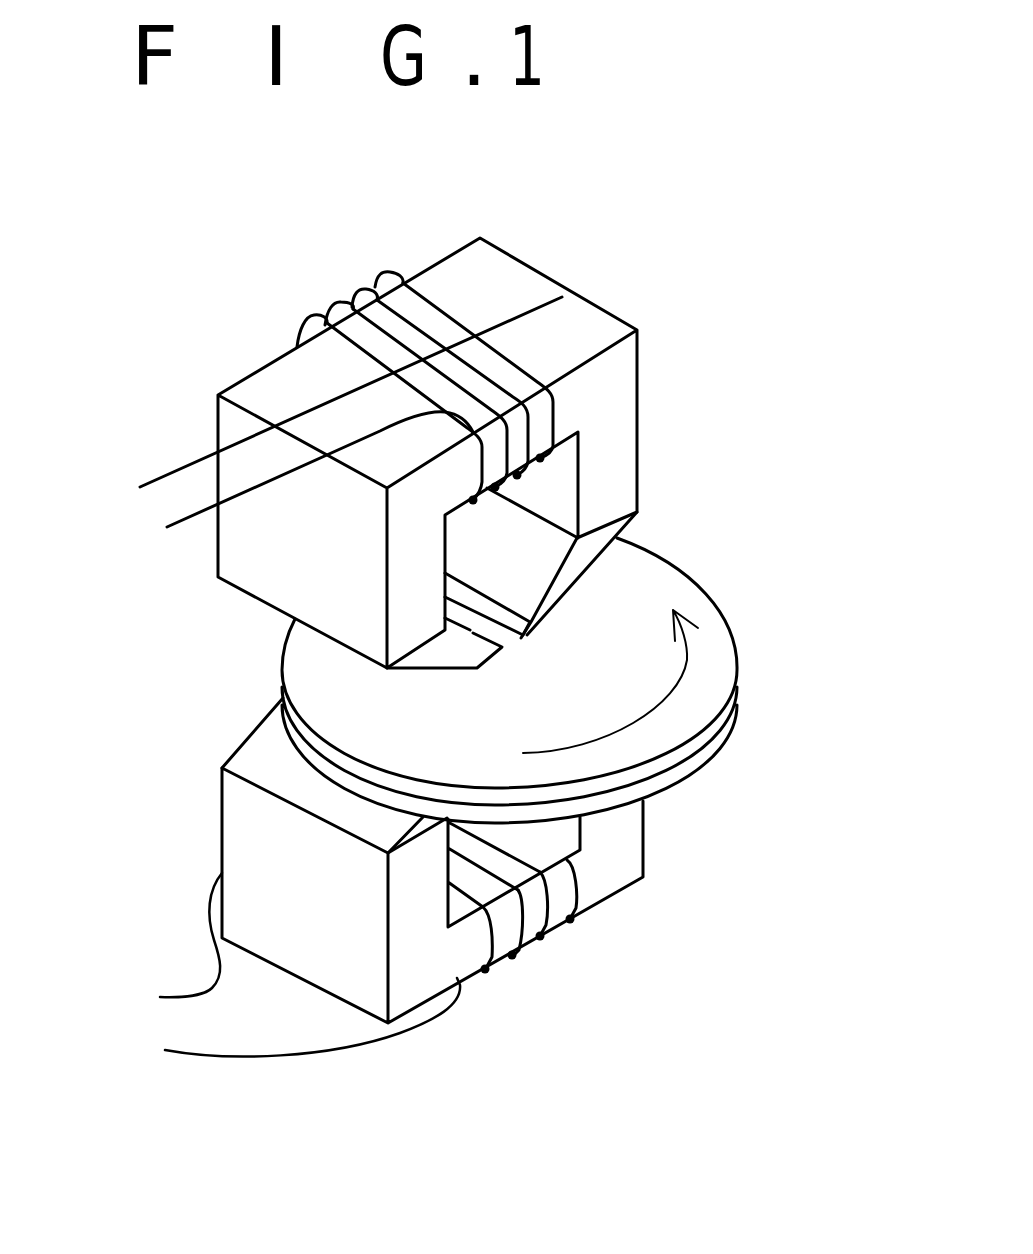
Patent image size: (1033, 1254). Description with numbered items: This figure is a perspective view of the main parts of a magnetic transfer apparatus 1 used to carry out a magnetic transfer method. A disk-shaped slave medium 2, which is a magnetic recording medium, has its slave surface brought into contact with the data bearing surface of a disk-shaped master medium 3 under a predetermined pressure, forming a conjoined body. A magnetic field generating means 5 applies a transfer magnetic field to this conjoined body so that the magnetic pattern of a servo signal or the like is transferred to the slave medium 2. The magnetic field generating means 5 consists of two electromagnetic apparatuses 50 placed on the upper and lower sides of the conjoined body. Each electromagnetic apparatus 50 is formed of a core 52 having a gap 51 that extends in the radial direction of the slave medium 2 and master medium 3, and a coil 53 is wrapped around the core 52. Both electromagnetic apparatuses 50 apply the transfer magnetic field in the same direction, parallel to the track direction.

The magnetic recording apparatus 1 is at (68, 302).
The slave medium 2 is at (713, 688).
The master medium 3 is at (695, 770).
The magnetic field generating means 5 is at (263, 332).
The electromagnetic apparatus 50 is at (563, 297).
The gap 51 is at (500, 642).
The core 52 is at (573, 577).
The coil 53 is at (385, 274).